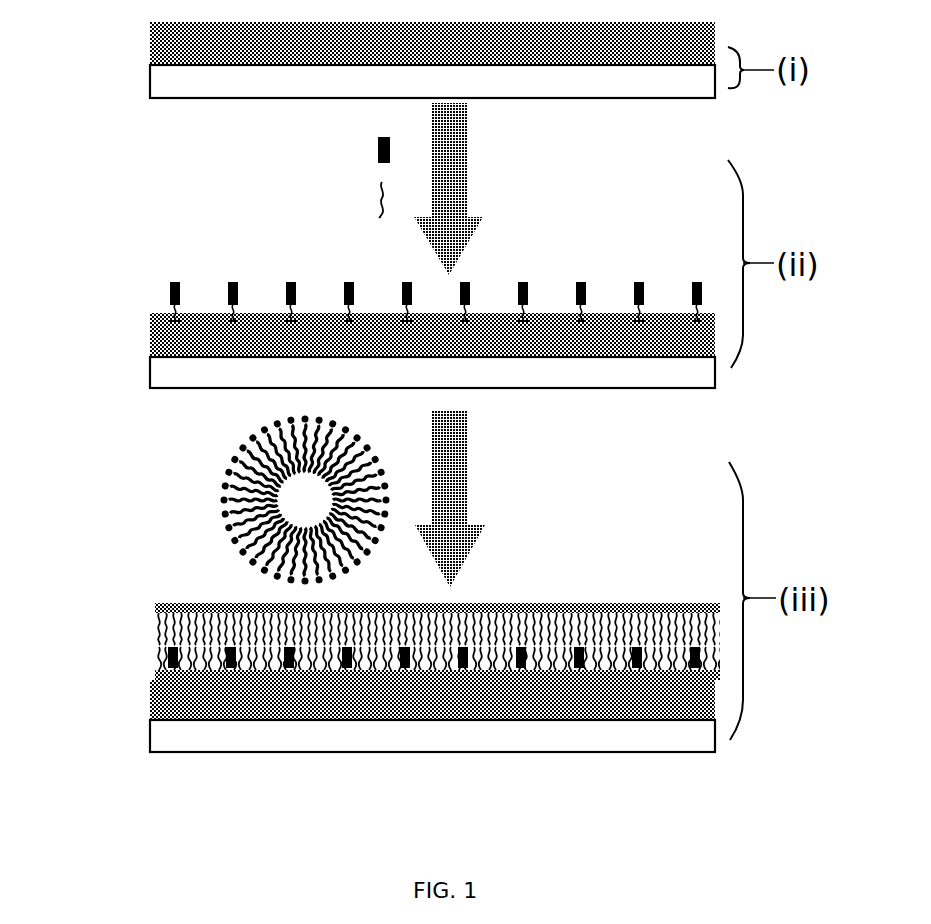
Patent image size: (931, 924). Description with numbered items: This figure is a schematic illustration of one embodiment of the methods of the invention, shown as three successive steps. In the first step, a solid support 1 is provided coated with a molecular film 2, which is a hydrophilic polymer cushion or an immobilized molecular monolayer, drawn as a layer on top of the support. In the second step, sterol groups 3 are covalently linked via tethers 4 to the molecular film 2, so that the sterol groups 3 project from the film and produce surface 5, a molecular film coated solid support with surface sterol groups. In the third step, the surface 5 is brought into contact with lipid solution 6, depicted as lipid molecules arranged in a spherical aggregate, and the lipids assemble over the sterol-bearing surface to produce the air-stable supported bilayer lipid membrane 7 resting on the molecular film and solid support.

The solid support 1 is at (120, 88).
The molecular film 2 is at (120, 42).
The sterol groups 3 is at (348, 152).
The tethers 4 is at (348, 203).
The surface 5 is at (115, 345).
The lipid solution 6 is at (190, 519).
The air-stable supported bilayer lipid membrane 7 is at (128, 677).